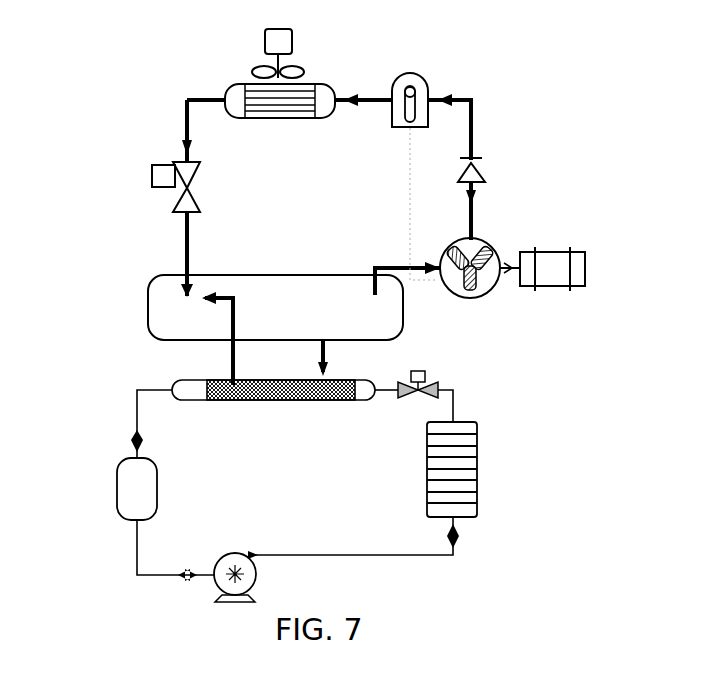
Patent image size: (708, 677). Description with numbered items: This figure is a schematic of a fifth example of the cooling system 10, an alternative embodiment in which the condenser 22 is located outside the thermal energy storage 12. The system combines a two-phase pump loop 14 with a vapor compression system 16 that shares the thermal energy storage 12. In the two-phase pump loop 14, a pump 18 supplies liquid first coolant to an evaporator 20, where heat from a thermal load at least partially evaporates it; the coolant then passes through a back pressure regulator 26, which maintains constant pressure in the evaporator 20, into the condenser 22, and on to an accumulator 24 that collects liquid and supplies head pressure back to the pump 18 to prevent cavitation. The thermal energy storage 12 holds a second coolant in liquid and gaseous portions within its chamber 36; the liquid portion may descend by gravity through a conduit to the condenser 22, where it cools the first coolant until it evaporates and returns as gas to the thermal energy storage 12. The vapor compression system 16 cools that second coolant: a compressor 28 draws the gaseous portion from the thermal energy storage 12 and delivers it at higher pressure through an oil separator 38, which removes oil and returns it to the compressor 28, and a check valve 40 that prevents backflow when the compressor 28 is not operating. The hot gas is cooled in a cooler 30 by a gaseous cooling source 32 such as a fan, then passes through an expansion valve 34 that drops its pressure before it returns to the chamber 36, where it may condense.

The cooling system 10 is at (72, 76).
The thermal energy storage 12 is at (148, 300).
The two-phase pump loop 14 is at (118, 572).
The vapor compression system 16 is at (148, 112).
The pump 18 is at (256, 577).
The evaporator 20 is at (478, 515).
The condenser 22 is at (186, 401).
The accumulator 24 is at (117, 470).
The back pressure regulator 26 is at (418, 396).
The compressor 28 is at (492, 289).
The cooler 30 is at (318, 84).
The gaseous cooling source 32 is at (288, 29).
The expansion valve 34 is at (150, 163).
The chamber 36 is at (289, 313).
The oil separator 38 is at (422, 82).
The check valve 40 is at (479, 165).